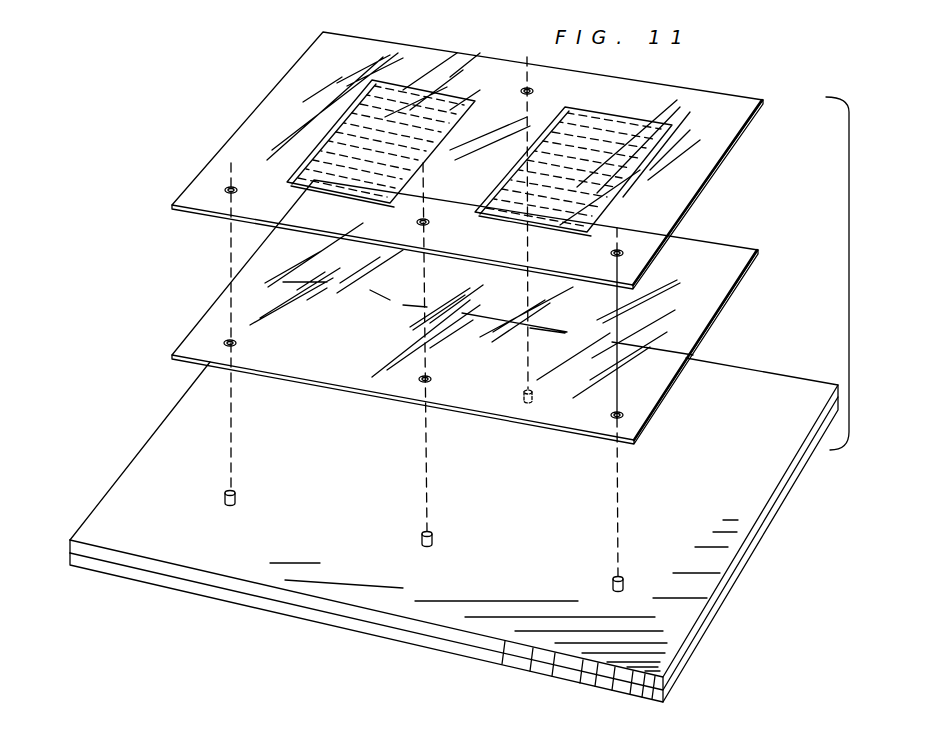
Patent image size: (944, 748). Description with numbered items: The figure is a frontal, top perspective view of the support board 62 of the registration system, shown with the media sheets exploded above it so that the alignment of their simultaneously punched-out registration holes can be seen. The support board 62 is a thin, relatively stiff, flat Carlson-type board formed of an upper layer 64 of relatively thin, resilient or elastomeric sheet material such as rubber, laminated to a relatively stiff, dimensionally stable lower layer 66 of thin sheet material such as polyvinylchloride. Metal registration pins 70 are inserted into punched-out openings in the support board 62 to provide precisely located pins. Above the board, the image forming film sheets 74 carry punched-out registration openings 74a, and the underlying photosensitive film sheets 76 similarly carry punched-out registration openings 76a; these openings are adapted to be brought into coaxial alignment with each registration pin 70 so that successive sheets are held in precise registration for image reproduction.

The support board 62 is at (454, 530).
The upper layer 64 is at (545, 569).
The lower layer 66 is at (255, 603).
The registration pins 70 is at (238, 498).
The film sheets 74 is at (694, 200).
The registration openings 74a is at (532, 90).
The photosensitive film sheets 76 is at (703, 345).
The registration openings 76a is at (226, 344).